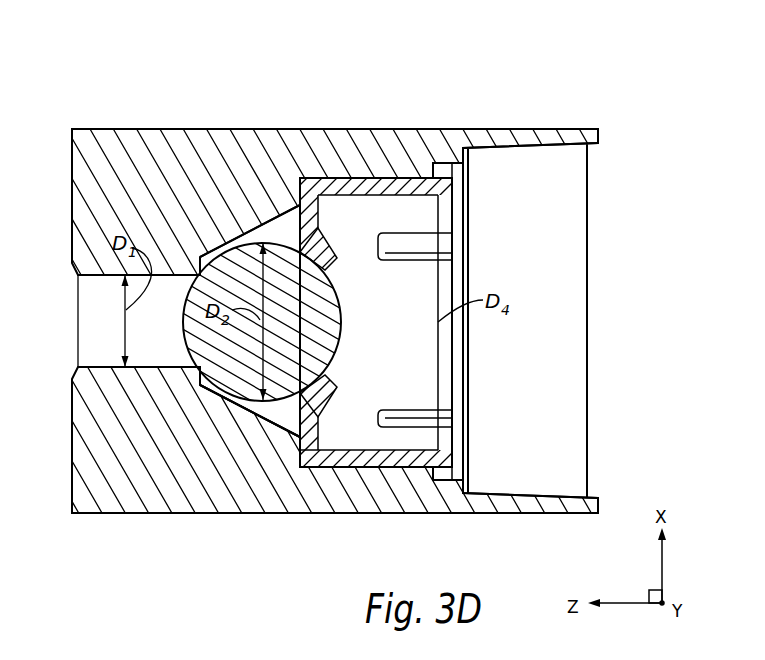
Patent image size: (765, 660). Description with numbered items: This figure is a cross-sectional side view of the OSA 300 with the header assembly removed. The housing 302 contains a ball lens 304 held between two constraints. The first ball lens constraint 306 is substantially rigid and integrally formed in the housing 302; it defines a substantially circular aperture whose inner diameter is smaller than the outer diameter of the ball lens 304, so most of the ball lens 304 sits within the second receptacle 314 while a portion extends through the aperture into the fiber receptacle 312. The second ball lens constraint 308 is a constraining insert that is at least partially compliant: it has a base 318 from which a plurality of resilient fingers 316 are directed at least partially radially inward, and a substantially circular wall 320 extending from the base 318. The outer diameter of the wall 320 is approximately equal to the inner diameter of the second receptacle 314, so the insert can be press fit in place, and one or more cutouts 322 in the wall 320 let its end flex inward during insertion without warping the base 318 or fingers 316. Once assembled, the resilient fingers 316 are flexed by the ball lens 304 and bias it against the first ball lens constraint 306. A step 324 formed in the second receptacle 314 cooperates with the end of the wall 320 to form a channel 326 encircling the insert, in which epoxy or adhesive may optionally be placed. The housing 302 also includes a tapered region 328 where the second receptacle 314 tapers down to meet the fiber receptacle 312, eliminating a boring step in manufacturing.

The OSA 300 is at (517, 105).
The housing 302 is at (306, 178).
The ball lens 304 is at (263, 238).
The first ball lens constraint 306 is at (210, 378).
The second ball lens constraint 308 is at (320, 472).
The fiber receptacle 312 is at (103, 323).
The second receptacle 314 is at (535, 390).
The resilient fingers 316 is at (336, 258).
The base 318 is at (346, 212).
The substantially circular wall 320 is at (392, 210).
The cutouts 322 is at (420, 262).
The step 324 is at (441, 181).
The channel 326 is at (457, 173).
The tapered region 328 is at (257, 233).